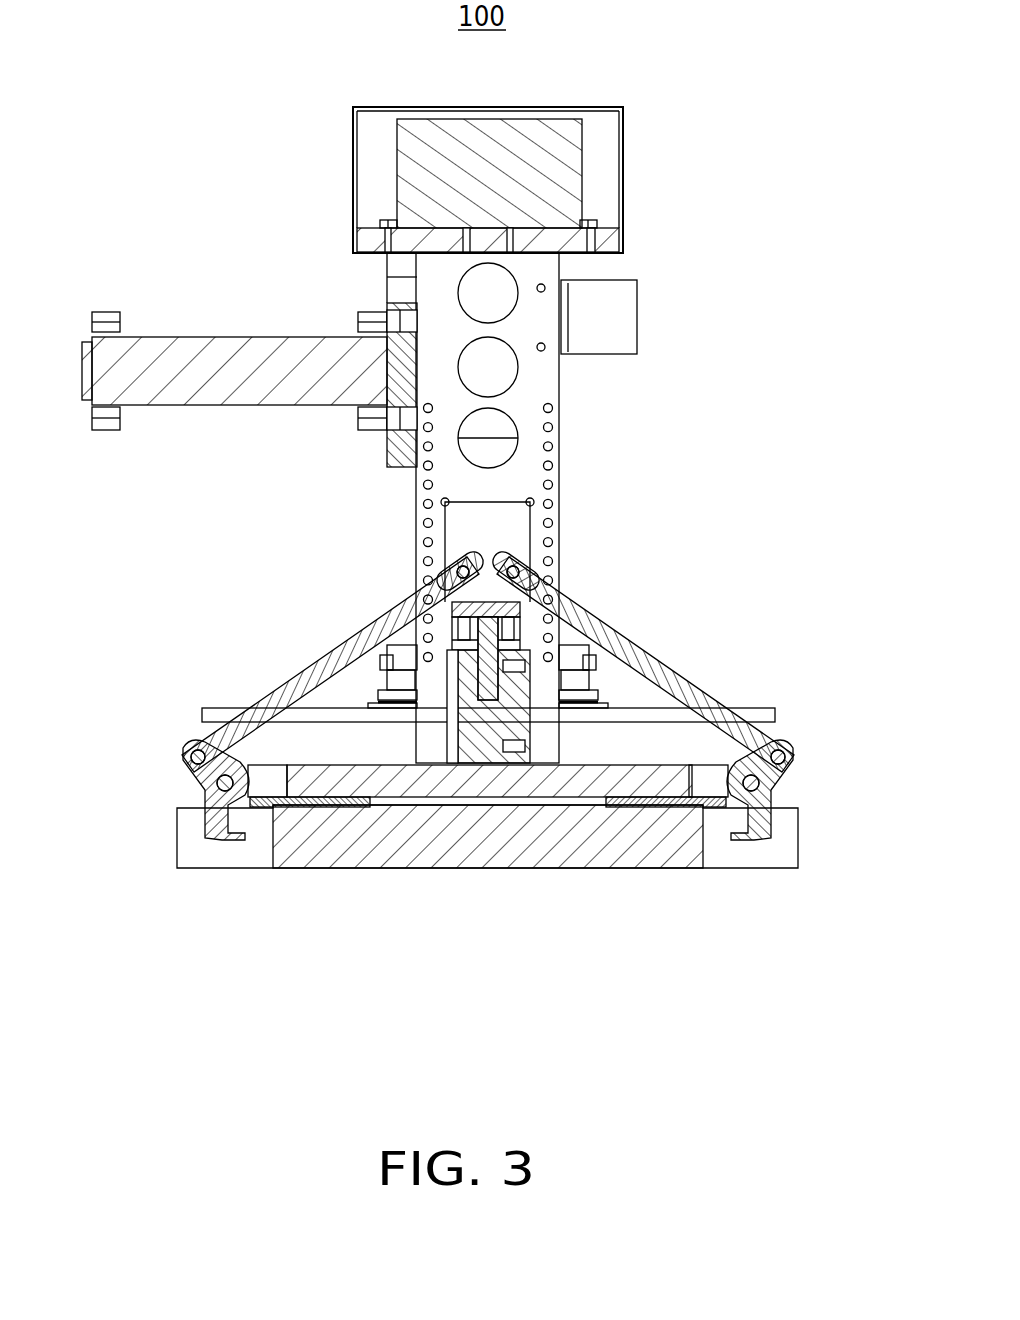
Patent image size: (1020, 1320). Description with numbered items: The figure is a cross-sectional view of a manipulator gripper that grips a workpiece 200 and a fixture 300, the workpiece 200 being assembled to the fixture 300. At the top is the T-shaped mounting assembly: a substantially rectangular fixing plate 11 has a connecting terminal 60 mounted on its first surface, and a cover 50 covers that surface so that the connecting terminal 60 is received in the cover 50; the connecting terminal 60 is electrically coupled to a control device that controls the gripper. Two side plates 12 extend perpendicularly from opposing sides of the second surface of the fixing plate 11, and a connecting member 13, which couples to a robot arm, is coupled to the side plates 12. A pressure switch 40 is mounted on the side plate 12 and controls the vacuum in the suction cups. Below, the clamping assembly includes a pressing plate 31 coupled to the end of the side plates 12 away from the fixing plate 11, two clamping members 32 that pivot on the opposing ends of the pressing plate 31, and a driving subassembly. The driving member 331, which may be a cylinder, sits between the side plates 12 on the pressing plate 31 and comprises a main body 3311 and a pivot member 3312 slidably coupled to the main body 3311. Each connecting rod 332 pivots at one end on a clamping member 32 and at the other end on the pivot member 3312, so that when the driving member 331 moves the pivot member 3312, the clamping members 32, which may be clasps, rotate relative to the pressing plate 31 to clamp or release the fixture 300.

The fixing plate 11 is at (597, 243).
The side plate 12 is at (545, 380).
The connecting member 13 is at (215, 355).
The pressure switch 40 is at (623, 317).
The cover 50 is at (625, 152).
The connecting terminal 60 is at (425, 135).
The workpiece 200 is at (215, 713).
The fixture 300 is at (232, 850).
The pressing plate 31 is at (300, 780).
The clamping member 32 is at (762, 803).
The driving member 331 is at (296, 514).
The connecting rod 332 is at (598, 628).
The main body 3311 is at (468, 680).
The pivot member 3312 is at (446, 580).